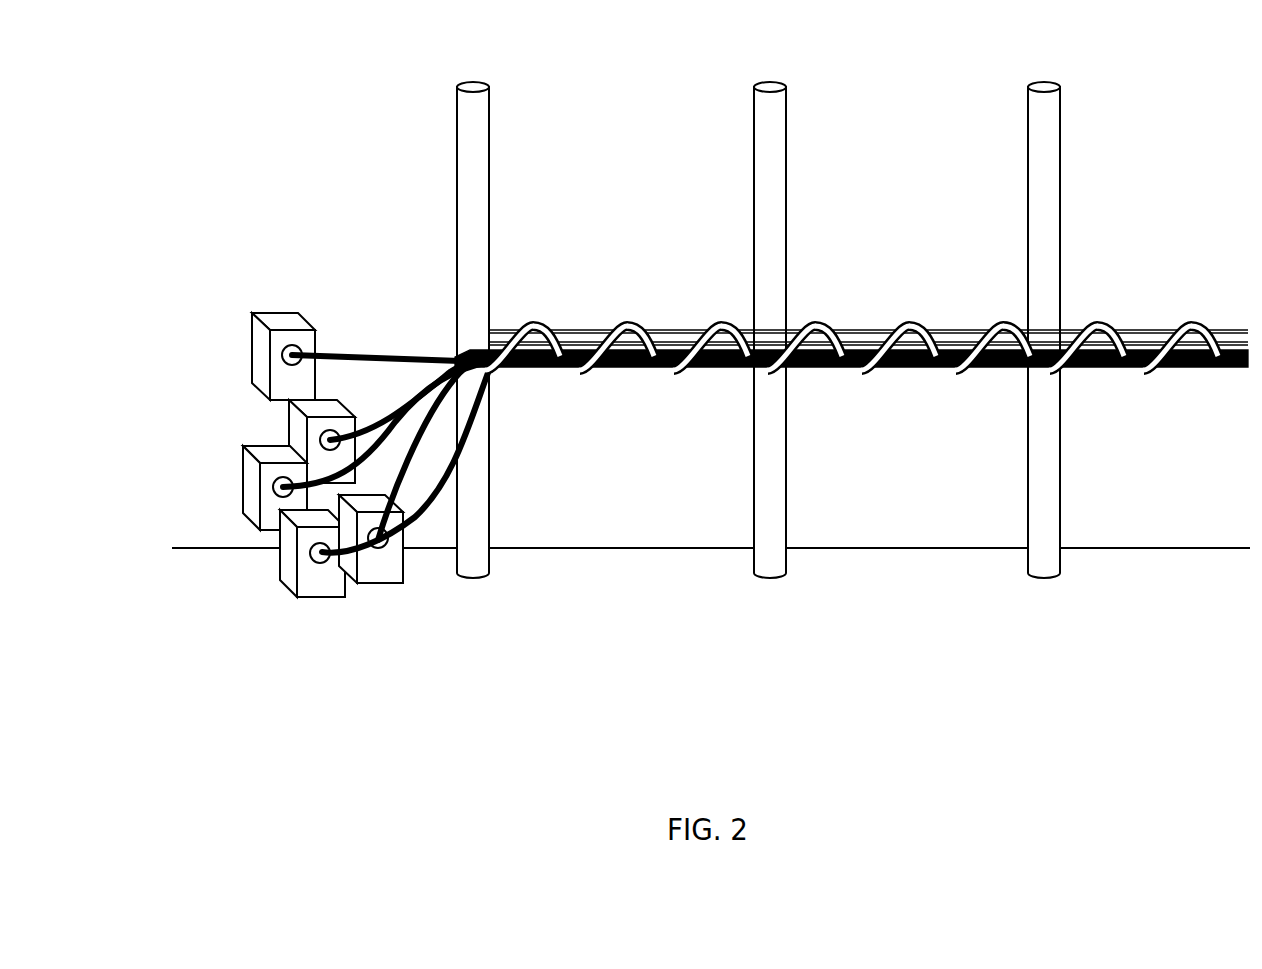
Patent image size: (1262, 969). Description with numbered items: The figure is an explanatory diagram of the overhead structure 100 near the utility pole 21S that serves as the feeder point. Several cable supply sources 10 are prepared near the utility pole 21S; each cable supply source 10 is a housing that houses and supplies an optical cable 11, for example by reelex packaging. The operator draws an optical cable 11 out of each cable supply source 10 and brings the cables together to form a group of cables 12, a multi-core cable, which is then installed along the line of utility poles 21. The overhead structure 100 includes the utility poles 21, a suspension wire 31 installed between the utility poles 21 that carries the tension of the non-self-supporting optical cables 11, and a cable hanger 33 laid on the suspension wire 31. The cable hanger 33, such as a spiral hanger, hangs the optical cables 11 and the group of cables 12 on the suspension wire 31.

The overhead structure 100 is at (1124, 150).
The cable supply source 10 is at (275, 313).
The optical cable 11 is at (343, 355).
The group of cables 12 is at (532, 368).
The utility pole 21 is at (764, 150).
The utility pole being a feeder point 21S is at (467, 150).
The suspension wire 31 is at (577, 330).
The cable hanger 33 is at (624, 321).